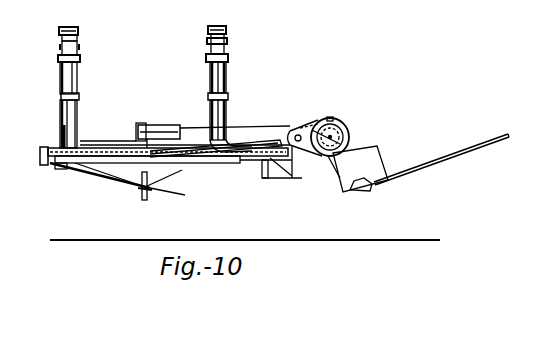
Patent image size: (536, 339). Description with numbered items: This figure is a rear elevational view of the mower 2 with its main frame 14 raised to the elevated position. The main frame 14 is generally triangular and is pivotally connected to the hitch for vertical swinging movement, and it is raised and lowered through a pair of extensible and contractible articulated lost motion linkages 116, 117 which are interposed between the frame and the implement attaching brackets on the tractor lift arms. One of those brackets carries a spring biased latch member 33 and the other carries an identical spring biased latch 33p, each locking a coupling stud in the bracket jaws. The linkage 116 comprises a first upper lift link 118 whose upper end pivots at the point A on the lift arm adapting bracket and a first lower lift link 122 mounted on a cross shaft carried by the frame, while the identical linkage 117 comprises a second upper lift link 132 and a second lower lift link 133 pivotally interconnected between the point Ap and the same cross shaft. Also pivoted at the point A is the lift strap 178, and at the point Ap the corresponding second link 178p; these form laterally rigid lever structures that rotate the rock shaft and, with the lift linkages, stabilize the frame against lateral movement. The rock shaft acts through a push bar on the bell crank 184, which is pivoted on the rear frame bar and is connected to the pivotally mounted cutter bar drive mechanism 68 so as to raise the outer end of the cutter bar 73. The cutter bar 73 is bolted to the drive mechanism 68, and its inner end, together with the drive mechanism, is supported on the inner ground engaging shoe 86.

The latch member 33 is at (69, 27).
The spring biased latch 33p is at (217, 26).
The pivot point on lift arm adapting bracket A is at (80, 63).
The pivot point on second implement attaching means Ap is at (229, 63).
The first upper lift link 118 is at (73, 80).
The lift strap 178 is at (62, 108).
The second link 178p is at (229, 84).
The articulated lost motion linkage 116 is at (79, 117).
The first lower lift link 122 is at (66, 130).
The second upper lift link 132 is at (211, 72).
The articulated lost motion linkage 117 is at (212, 112).
The second lower lift link 133 is at (224, 110).
The bell crank 184 is at (153, 125).
The main frame 14 is at (105, 172).
The mower 2 is at (262, 189).
The cutter bar drive mechanism 68 is at (343, 122).
The inner ground engaging shoe 86 is at (364, 186).
The cutter bar 73 is at (429, 160).